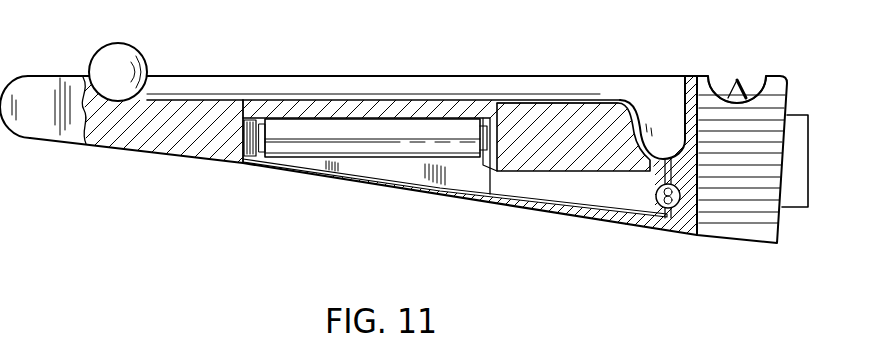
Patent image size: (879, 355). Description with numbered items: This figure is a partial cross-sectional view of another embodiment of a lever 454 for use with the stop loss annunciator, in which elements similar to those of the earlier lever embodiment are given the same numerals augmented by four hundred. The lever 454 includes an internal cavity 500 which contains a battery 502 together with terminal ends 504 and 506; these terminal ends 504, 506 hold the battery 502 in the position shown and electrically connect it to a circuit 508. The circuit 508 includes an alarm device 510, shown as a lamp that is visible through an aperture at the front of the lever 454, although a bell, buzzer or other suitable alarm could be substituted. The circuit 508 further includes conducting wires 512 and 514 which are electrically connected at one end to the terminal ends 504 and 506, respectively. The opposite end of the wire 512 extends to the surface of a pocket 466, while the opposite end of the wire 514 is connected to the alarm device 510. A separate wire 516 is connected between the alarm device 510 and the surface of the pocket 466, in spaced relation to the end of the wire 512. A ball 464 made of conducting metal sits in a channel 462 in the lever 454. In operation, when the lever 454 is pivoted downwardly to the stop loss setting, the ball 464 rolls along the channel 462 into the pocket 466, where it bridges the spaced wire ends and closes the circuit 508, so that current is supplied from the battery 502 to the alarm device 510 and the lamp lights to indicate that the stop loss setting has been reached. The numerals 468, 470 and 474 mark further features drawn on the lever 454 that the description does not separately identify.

The lever 454 is at (228, 174).
The channel 462 is at (271, 98).
The ball 464 is at (134, 64).
The pocket 466 is at (673, 143).
The recess 468 is at (719, 78).
The pointer 470 is at (738, 80).
The cap 474 is at (780, 120).
The internal cavity 500 is at (447, 173).
The battery 502 is at (312, 146).
The terminal end 504 is at (497, 103).
The terminal end 506 is at (250, 164).
The circuit 508 is at (535, 208).
The alarm device 510 is at (670, 220).
The conducting wire 512 is at (562, 172).
The conducting wire 514 is at (500, 193).
The wire 516 is at (627, 190).